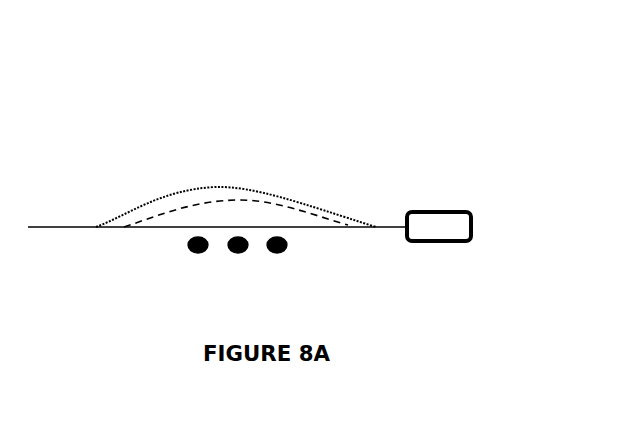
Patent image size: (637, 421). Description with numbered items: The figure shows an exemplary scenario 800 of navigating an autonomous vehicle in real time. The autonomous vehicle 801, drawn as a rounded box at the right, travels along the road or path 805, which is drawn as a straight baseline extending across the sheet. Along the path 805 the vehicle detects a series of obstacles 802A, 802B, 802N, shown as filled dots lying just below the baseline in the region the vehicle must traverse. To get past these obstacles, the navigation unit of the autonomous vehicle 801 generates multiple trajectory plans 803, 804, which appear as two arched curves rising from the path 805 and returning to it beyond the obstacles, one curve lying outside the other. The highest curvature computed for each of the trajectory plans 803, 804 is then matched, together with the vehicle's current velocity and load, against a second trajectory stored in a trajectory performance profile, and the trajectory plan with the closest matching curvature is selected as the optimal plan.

The fluid ejection / pressure profile diagram 800 is at (203, 53).
The autonomous vehicle 801 is at (452, 210).
The obstacle 802A is at (287, 253).
The obstacle 802B is at (238, 254).
The obstacle 802N is at (188, 253).
The trajectory plan 803 is at (200, 192).
The trajectory plan 804 is at (258, 202).
The path 805 is at (45, 227).